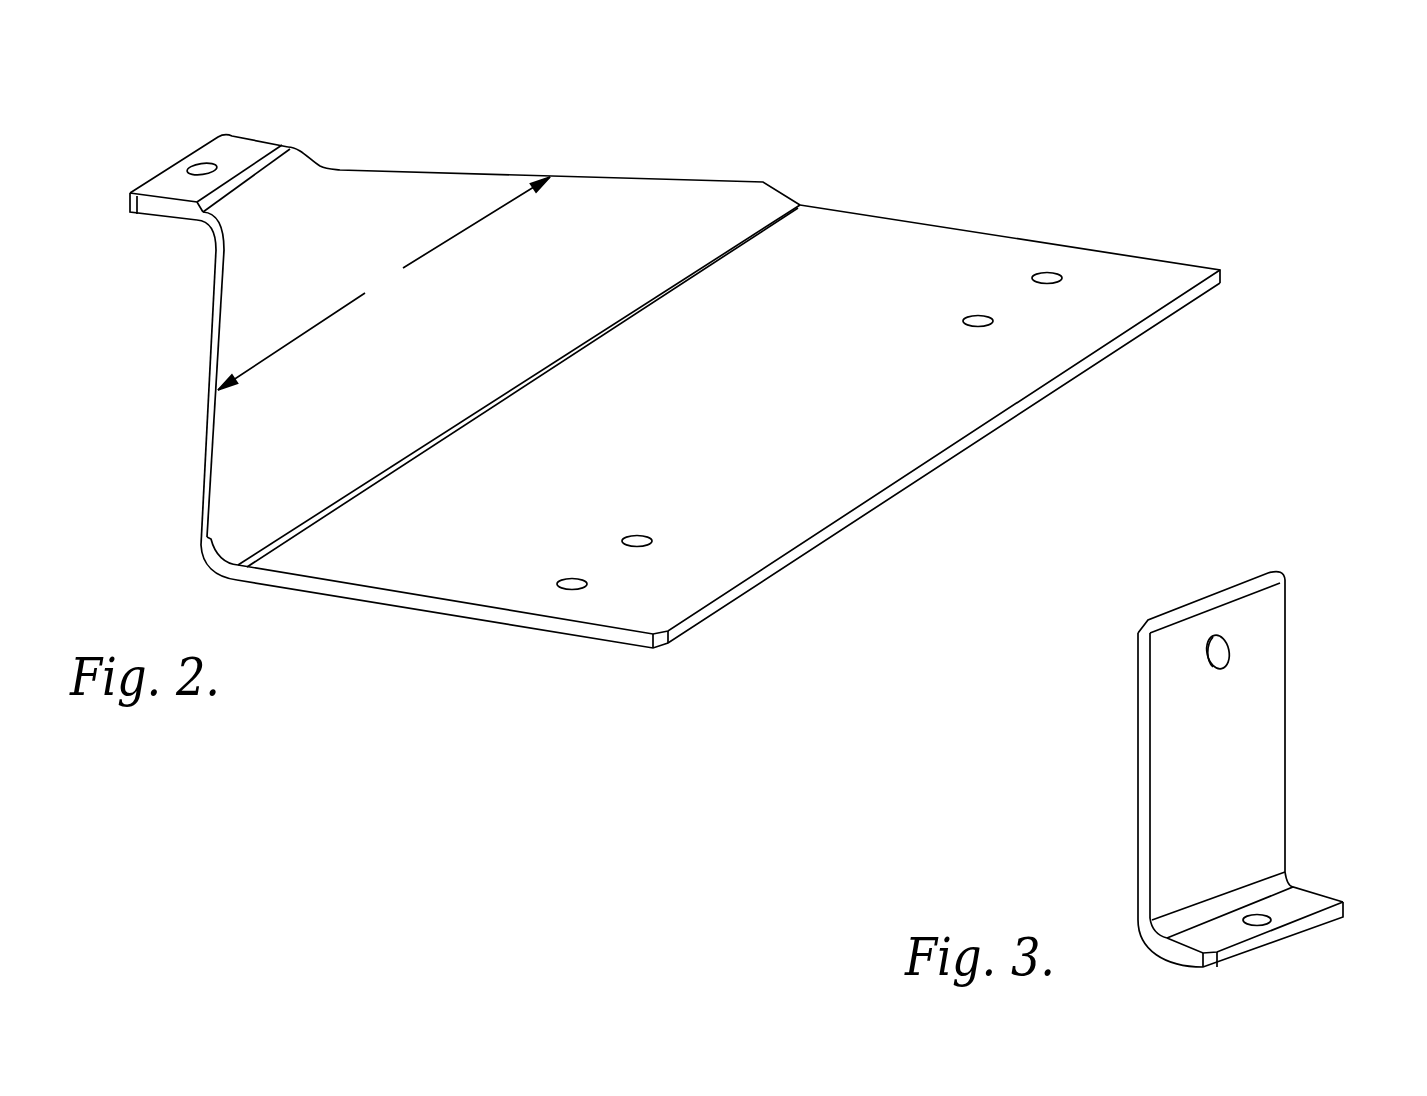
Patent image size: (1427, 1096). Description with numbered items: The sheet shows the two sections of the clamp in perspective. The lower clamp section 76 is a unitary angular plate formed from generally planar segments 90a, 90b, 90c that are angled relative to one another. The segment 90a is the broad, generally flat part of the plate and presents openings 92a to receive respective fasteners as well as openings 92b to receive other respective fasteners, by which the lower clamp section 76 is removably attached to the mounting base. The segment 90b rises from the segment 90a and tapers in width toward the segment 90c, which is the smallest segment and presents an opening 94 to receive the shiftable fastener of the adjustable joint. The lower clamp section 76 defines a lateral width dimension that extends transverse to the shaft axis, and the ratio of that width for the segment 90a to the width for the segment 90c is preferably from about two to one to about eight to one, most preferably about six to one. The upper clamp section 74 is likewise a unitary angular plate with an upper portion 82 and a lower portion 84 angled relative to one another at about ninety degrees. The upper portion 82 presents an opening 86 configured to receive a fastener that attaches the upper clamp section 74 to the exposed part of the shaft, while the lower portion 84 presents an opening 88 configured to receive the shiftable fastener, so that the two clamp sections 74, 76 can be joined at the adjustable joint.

In FIG. 2, the lower clamp section 76 is at (666, 389).
In FIG. 2, the segment 90a is at (470, 597).
In FIG. 2, the segment 90b is at (617, 183).
In FIG. 2, the segment 90c is at (229, 165).
In FIG. 2, the opening 94 is at (200, 170).
In FIG. 2, the openings 92a is at (1052, 278).
In FIG. 2, the openings 92b is at (990, 320).
In FIG. 3, the upper clamp section 74 is at (1270, 738).
In FIG. 3, the upper portion 82 is at (1270, 755).
In FIG. 3, the lower portion 84 is at (1270, 916).
In FIG. 3, the opening 86 is at (1223, 650).
In FIG. 3, the opening 88 is at (1260, 922).